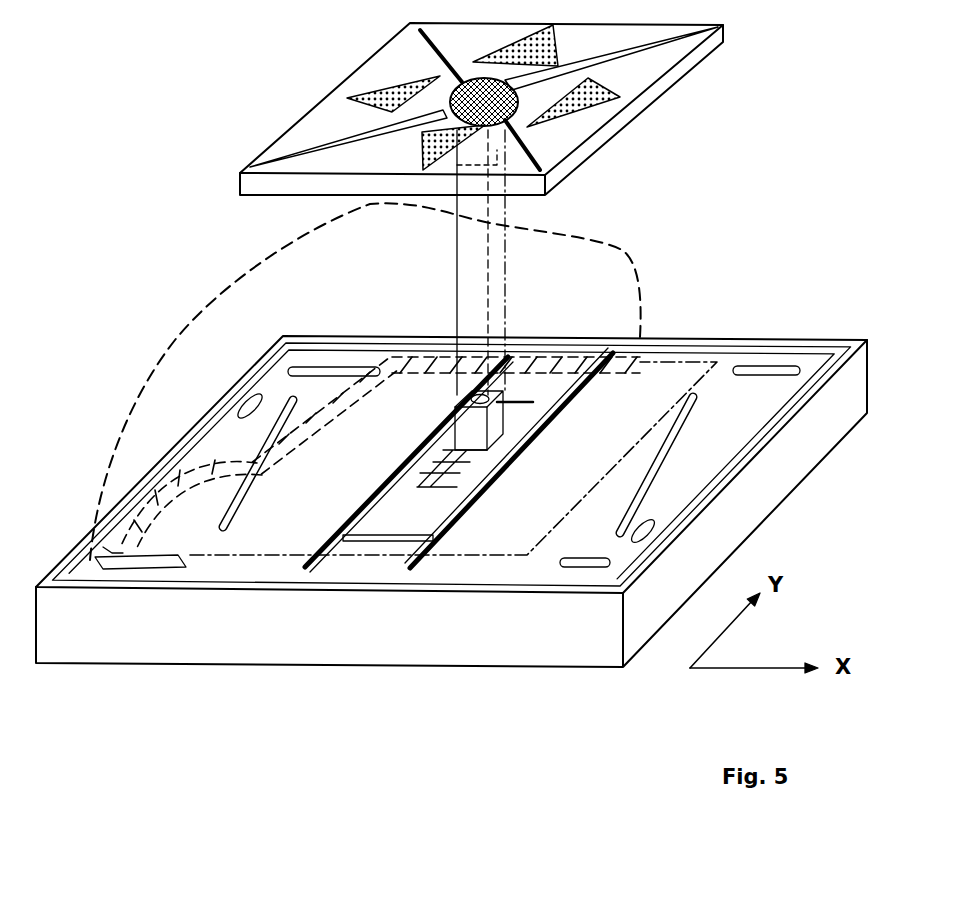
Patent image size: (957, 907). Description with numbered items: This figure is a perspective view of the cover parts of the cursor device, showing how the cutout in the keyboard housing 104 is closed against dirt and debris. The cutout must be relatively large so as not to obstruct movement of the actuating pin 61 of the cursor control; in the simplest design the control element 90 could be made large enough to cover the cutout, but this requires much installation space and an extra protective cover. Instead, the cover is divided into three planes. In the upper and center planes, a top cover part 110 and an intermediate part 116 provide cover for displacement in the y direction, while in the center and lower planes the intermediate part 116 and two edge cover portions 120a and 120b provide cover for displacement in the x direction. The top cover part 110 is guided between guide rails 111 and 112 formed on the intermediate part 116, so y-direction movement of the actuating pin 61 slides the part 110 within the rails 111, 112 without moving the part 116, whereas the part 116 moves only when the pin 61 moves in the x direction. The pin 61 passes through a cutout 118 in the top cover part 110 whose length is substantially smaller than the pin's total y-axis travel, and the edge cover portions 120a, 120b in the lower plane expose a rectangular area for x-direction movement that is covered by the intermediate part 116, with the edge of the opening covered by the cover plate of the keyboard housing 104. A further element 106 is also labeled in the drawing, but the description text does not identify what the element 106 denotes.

The control element 90 is at (665, 66).
The keyboard housing 104 is at (233, 335).
The base 106 is at (548, 555).
The top cover part 110 is at (552, 400).
The guide rail 111 is at (325, 540).
The guide rail 112 is at (440, 540).
The intermediate part 116 is at (647, 403).
The cutout 118 is at (420, 486).
The actuating pin 61 is at (500, 417).
The edge cover portion 120a is at (175, 540).
The edge cover portion 120b is at (750, 403).